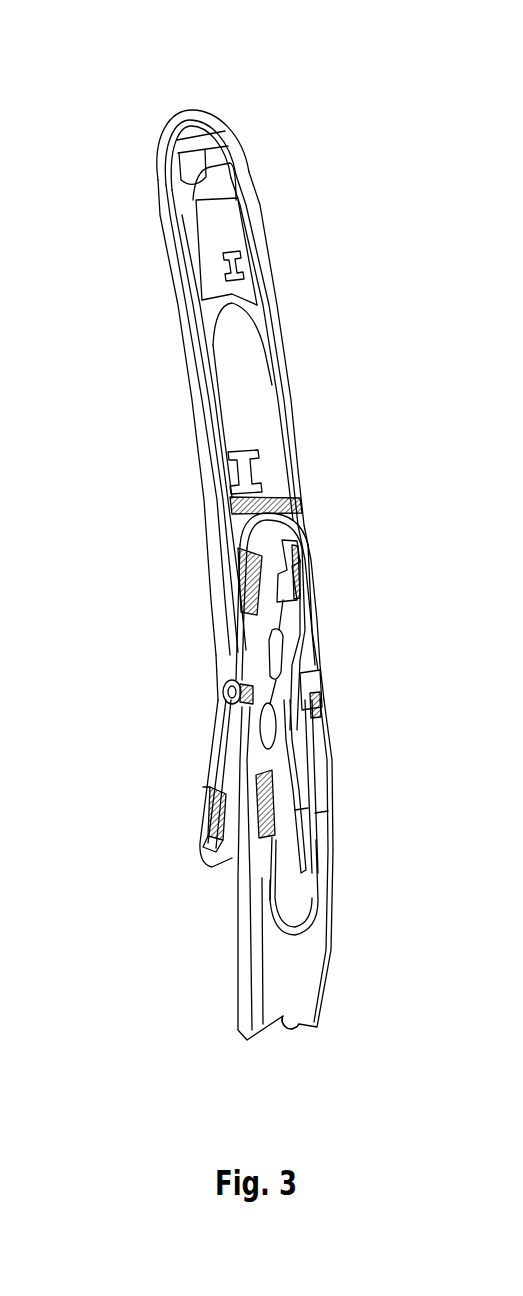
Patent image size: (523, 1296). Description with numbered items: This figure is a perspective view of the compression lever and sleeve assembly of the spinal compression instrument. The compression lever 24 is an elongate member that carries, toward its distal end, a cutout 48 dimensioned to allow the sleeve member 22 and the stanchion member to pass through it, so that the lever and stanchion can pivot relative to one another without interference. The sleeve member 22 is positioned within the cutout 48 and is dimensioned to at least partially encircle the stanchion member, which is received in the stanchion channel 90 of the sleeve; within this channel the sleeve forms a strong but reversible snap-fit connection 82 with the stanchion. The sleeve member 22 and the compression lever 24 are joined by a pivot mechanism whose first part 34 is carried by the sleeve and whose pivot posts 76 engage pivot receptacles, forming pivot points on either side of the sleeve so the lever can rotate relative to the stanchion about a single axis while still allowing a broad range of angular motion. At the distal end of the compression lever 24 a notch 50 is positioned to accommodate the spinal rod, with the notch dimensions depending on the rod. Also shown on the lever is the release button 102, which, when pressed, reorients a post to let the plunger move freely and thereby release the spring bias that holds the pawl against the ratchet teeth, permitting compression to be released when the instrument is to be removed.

The compression lever 24 is at (264, 93).
The release button 102 is at (247, 212).
The stanchion channel 90 is at (280, 526).
The snap-fit connection 82 is at (292, 566).
The first part of pivot mechanism 34 is at (229, 692).
The pivot post 76 is at (312, 680).
The sleeve member 22 is at (168, 732).
The cutout 48 is at (292, 880).
The notch 50 is at (283, 1020).